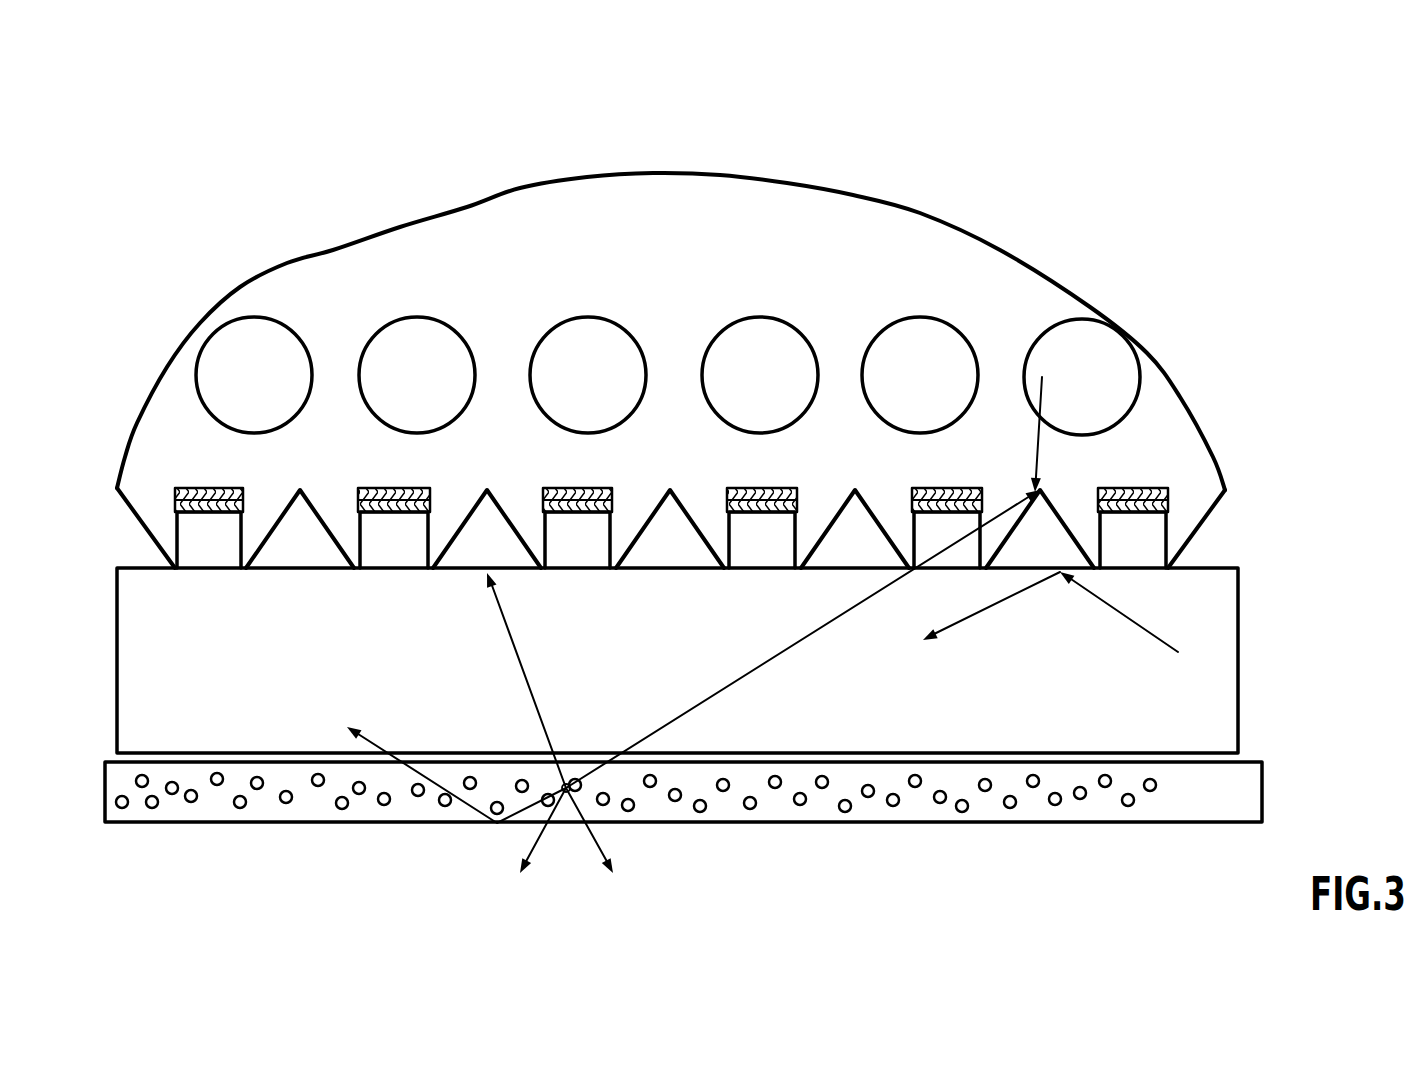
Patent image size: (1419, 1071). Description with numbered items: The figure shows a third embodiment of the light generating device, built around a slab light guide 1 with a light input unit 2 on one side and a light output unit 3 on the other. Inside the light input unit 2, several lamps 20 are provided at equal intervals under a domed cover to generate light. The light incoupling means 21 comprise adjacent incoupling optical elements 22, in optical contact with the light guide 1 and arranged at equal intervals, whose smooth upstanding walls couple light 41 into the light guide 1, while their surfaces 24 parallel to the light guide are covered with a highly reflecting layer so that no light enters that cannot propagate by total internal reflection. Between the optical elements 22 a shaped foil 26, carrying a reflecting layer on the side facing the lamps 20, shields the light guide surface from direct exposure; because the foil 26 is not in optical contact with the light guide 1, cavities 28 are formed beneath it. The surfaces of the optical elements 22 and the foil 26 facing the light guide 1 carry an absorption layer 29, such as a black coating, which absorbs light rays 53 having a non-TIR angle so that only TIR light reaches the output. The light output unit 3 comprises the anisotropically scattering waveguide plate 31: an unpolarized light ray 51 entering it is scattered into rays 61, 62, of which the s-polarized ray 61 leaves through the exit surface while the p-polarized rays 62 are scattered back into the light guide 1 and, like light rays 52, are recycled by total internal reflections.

The slab light guide 1 is at (1262, 673).
The light input unit 2 is at (1262, 450).
The light output unit 3 is at (1279, 783).
The lamps 20 is at (762, 345).
The light incoupling means 21 is at (1214, 535).
The incoupling optical elements 22 is at (375, 532).
The surfaces of the optical elements 24 is at (402, 503).
The shaped foil 26 is at (480, 510).
The cavities 28 is at (502, 545).
The absorption layer 29 is at (476, 505).
The waveguide plate 31 is at (1147, 797).
The light 41 is at (1043, 393).
The light ray 51 is at (760, 672).
The light rays 52 is at (1062, 588).
The light rays 53 is at (498, 622).
The scattered light ray 61 is at (540, 840).
The scattered light rays 62 is at (395, 757).